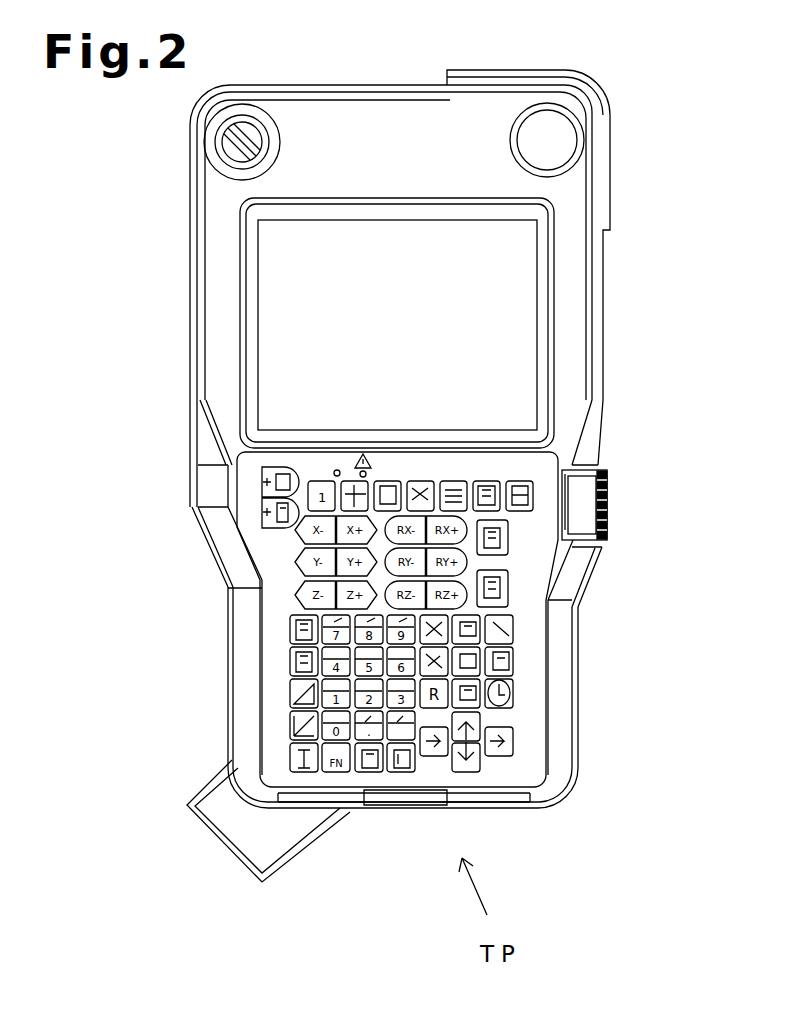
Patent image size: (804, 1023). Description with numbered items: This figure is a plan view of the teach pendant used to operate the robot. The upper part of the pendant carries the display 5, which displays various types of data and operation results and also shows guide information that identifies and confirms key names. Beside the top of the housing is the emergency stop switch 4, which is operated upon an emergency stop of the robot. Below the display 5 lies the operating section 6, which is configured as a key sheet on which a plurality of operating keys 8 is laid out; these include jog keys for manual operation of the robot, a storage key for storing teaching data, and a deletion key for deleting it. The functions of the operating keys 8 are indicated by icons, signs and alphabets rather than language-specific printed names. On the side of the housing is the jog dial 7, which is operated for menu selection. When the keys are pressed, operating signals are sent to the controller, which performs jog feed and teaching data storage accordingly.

The emergency stop switch 4 is at (558, 138).
The display 5 is at (510, 315).
The operating section 6 is at (527, 580).
The jog dial 7 is at (585, 507).
The operating keys 8 is at (517, 747).